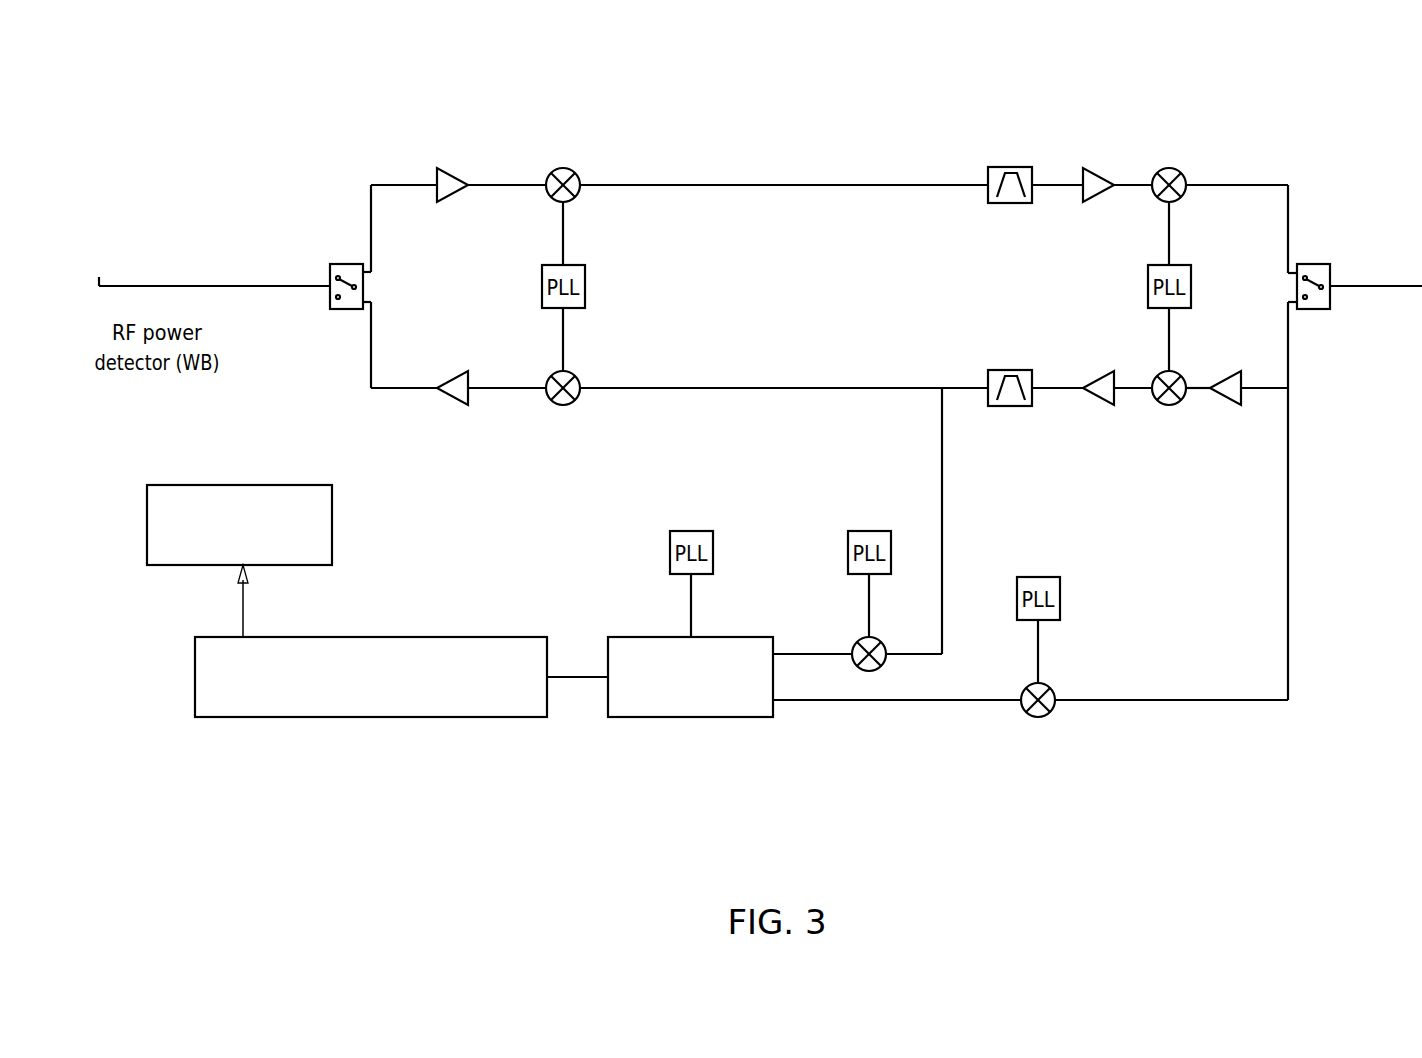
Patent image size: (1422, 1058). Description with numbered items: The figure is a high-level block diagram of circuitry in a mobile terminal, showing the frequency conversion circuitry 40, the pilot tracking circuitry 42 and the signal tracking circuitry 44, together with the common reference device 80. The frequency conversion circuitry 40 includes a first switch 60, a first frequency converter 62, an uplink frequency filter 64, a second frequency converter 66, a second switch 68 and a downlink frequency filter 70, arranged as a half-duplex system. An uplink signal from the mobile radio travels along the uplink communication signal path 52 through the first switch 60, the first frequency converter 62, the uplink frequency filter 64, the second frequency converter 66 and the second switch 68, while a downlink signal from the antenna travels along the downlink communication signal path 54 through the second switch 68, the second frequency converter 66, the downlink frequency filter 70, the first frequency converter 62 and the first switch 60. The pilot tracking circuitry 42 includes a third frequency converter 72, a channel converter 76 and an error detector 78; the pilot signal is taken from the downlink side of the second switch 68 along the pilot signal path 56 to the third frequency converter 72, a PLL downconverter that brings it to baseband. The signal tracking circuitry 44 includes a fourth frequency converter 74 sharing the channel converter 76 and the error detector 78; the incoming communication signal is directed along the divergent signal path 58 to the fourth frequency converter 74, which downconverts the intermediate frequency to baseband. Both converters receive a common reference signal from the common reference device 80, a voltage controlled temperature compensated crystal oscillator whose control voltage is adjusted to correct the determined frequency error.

The frequency conversion circuitry 40 is at (488, 124).
The pilot tracking circuitry 42 is at (899, 725).
The signal tracking circuitry 44 is at (1017, 512).
The uplink communication signal path 52 is at (762, 185).
The downlink communication signal path 54 is at (795, 388).
The pilot signal path 56 is at (1185, 700).
The divergent signal path 58 is at (942, 433).
The first switch 60 is at (338, 264).
The first frequency converter 62 is at (585, 301).
The uplink frequency filter 64 is at (998, 167).
The second frequency converter 66 is at (1148, 303).
The second switch 68 is at (1325, 309).
The downlink frequency filter 70 is at (988, 370).
The third frequency converter 72 is at (1038, 717).
The fourth frequency converter 74 is at (857, 642).
The channel converter 76 is at (676, 720).
The error detector 78 is at (320, 717).
The common reference device 80 is at (170, 485).